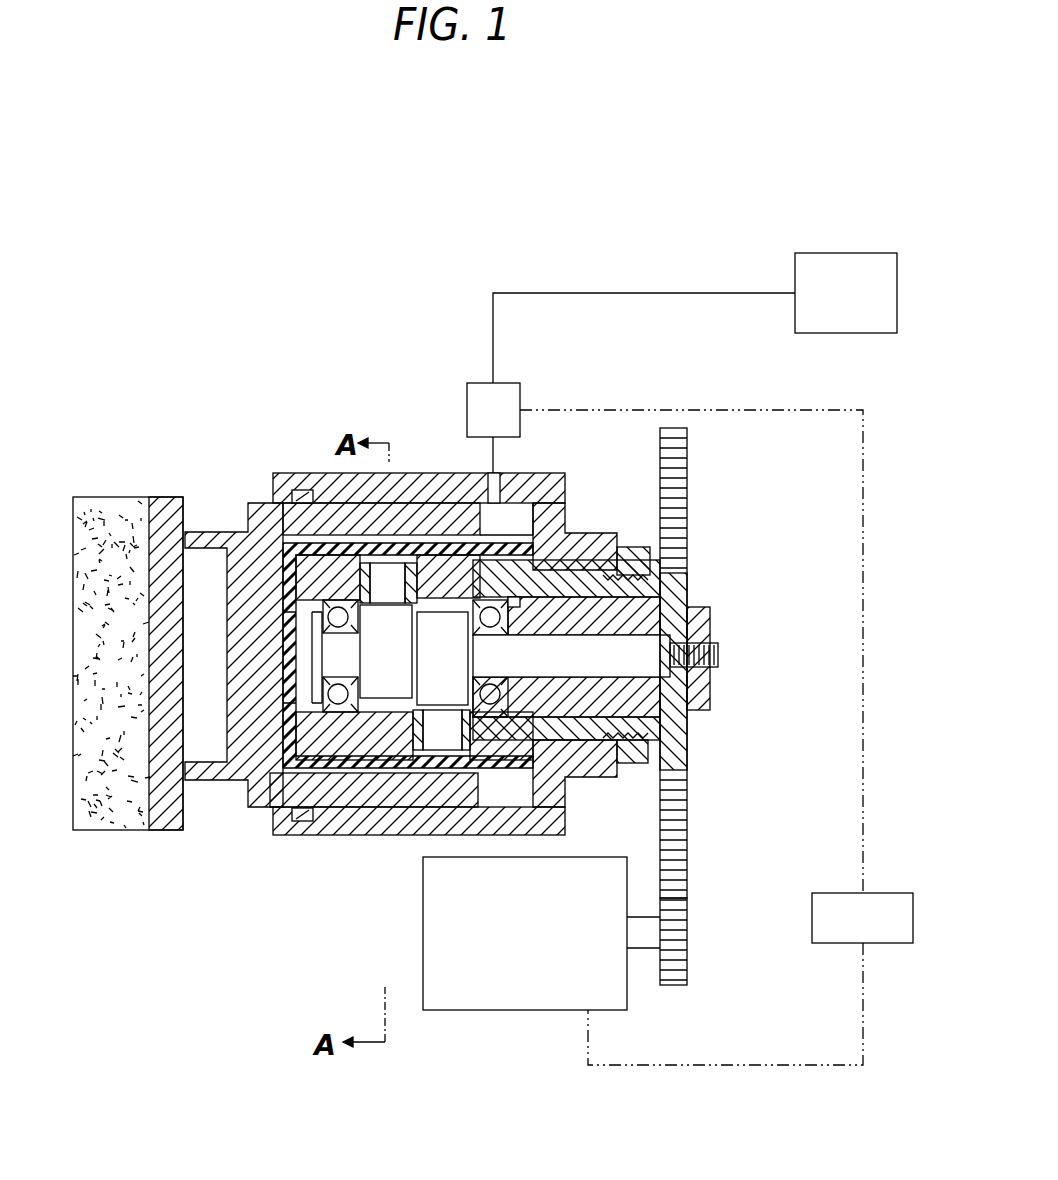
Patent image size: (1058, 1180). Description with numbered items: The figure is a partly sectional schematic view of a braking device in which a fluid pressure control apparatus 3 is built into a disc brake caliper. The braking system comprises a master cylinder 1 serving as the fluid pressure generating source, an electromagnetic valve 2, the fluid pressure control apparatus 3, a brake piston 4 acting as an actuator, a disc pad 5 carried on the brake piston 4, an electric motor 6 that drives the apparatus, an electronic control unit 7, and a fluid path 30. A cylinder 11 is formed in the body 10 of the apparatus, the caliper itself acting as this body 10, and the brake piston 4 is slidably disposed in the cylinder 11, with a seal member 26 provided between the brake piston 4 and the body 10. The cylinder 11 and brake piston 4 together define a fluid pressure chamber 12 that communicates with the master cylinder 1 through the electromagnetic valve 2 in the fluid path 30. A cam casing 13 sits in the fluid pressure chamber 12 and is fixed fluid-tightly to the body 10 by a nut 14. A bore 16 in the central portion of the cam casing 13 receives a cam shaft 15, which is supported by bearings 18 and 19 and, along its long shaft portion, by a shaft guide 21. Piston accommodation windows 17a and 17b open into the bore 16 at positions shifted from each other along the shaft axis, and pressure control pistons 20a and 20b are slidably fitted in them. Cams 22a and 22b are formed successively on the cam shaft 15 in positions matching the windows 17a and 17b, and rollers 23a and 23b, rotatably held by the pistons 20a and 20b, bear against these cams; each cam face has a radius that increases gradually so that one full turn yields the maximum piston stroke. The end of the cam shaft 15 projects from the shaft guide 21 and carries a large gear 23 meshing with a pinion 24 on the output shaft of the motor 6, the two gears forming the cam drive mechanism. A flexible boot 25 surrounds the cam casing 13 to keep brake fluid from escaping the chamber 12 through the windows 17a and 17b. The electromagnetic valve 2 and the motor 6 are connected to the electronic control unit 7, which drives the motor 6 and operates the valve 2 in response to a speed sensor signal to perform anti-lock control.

The master cylinder 1 is at (832, 253).
The electromagnetic valve 2 is at (520, 400).
The fluid pressure control apparatus 3 is at (236, 401).
The brake piston 4 is at (233, 533).
The disc pad 5 is at (112, 510).
The electric motor 6 is at (473, 1010).
The electronic control unit 7 is at (880, 943).
The body 10 is at (445, 472).
The cylinder 11 is at (515, 508).
The fluid pressure chamber 12 is at (517, 533).
The cam casing 13 is at (338, 712).
The nut 14 is at (640, 560).
The cam shaft 15 is at (623, 652).
The bore 16 is at (640, 745).
The piston accommodation window 17a is at (340, 580).
The piston accommodation window 17b is at (478, 745).
The bearing 18 is at (365, 700).
The bearing 19 is at (505, 742).
The pressure control piston 20a is at (387, 570).
The pressure control piston 20b is at (433, 742).
The shaft guide 21 is at (570, 703).
The cam 22a is at (322, 650).
The cam 22b is at (452, 700).
The large gear 23 is at (685, 823).
The roller 23a is at (398, 558).
The roller 23b is at (432, 750).
The pinion 24 is at (672, 950).
The flexible boot 25 is at (293, 630).
The seal member 26 is at (298, 556).
The fluid path 30 is at (490, 470).